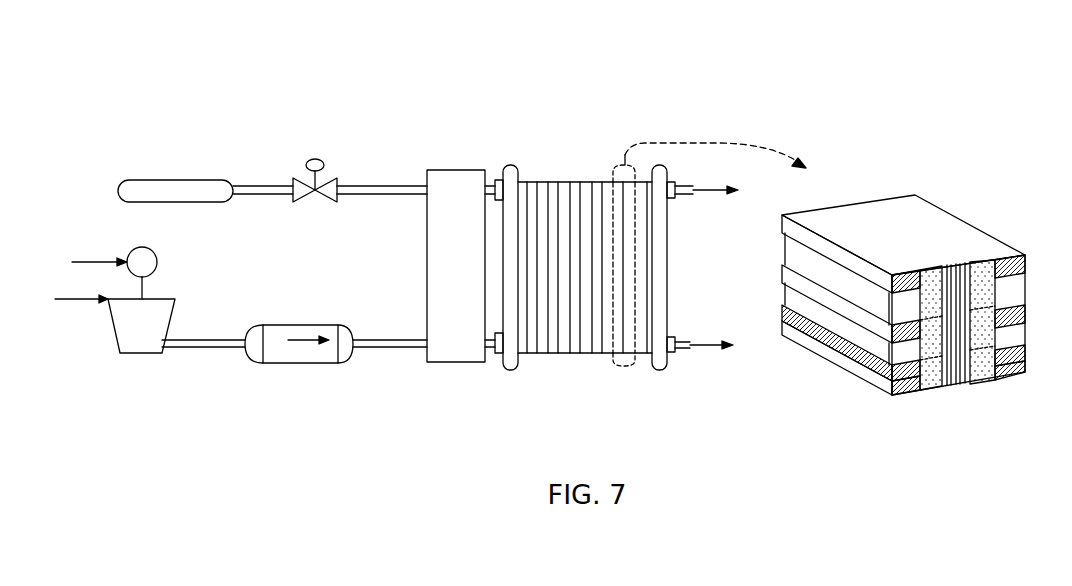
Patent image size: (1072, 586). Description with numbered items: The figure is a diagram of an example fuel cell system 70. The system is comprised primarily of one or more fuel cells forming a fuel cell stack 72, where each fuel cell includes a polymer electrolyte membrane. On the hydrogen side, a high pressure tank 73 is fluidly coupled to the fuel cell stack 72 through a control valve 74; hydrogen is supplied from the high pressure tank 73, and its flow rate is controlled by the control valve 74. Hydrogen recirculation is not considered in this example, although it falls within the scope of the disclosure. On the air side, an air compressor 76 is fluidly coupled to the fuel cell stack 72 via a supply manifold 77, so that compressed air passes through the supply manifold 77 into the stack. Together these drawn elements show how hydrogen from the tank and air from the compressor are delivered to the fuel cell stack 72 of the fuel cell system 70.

The fuel cell system 70 is at (138, 74).
The fuel cell stack 72 is at (596, 112).
The high pressure tank 73 is at (118, 186).
The control valve 74 is at (305, 200).
The air compressor 76 is at (113, 338).
The supply manifold 77 is at (333, 363).